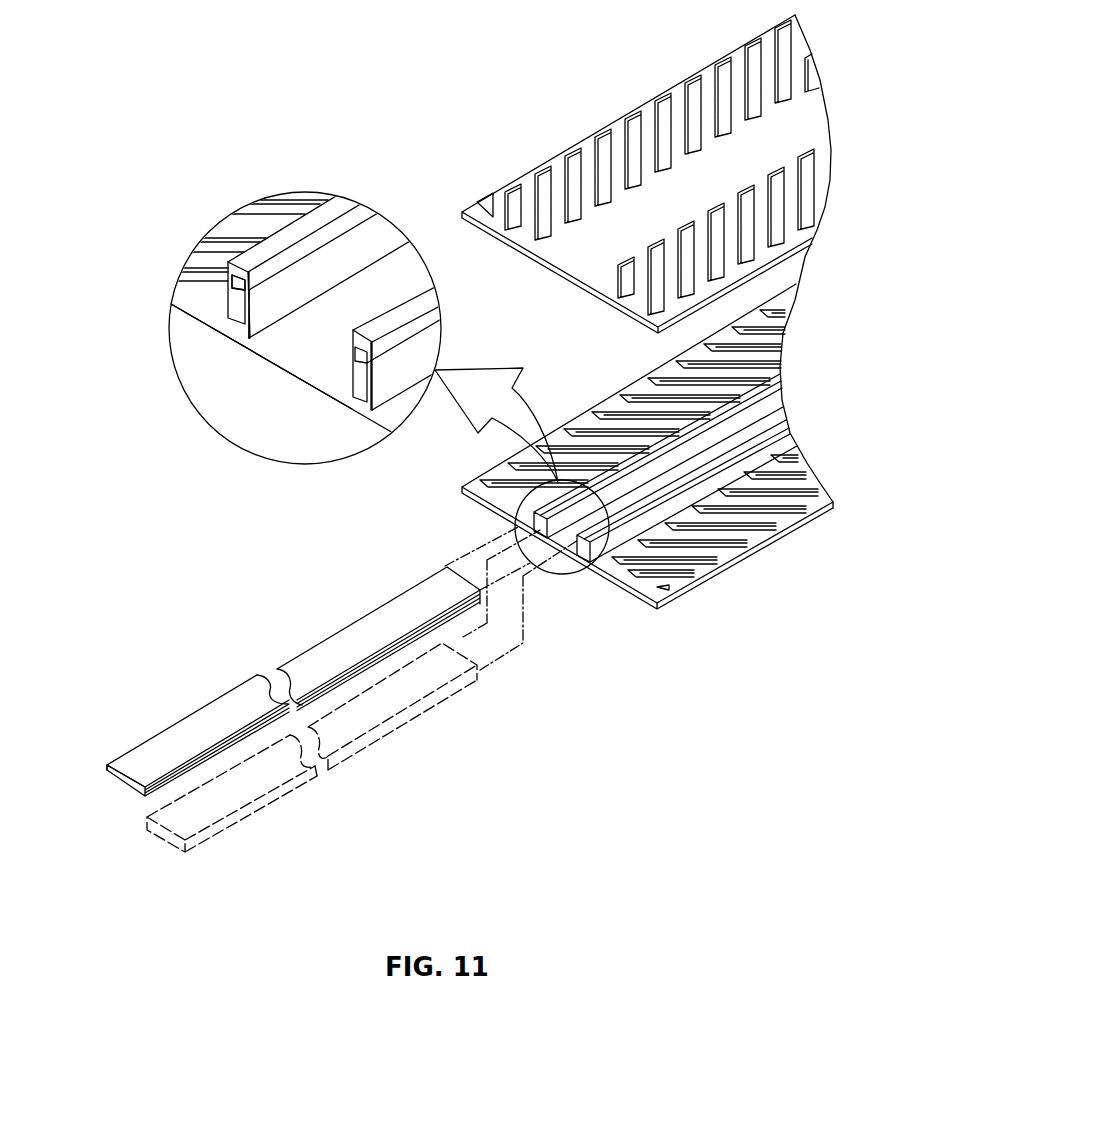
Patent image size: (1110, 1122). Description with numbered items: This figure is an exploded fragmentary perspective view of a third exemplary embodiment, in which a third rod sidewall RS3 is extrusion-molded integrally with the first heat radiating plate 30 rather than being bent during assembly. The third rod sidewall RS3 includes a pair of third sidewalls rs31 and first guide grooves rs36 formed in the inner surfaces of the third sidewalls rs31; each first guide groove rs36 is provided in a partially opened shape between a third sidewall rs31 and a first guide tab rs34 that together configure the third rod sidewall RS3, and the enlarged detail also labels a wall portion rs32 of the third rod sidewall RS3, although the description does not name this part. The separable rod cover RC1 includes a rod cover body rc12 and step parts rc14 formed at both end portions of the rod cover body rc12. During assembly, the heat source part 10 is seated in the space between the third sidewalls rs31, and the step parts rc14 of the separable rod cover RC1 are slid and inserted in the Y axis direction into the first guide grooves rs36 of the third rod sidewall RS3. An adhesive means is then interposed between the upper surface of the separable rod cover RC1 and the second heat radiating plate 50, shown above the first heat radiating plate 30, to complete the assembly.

The second heat radiating plate 50 is at (609, 104).
The first heat radiating plate 30 is at (688, 618).
The third rod sidewall RS3 is at (588, 554).
The third sidewall rs31 is at (212, 324).
The side wall portion of rail structure rs32 is at (240, 323).
The first guide tab rs34 is at (236, 272).
The first guide groove rs36 is at (242, 285).
The separable rod cover RC1 is at (258, 712).
The rod cover body rc12 is at (222, 716).
The step part rc14 is at (107, 765).
The heat source part 10 is at (377, 765).